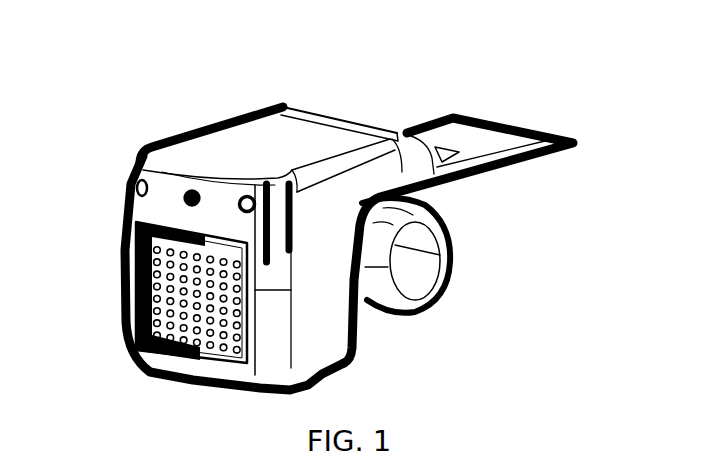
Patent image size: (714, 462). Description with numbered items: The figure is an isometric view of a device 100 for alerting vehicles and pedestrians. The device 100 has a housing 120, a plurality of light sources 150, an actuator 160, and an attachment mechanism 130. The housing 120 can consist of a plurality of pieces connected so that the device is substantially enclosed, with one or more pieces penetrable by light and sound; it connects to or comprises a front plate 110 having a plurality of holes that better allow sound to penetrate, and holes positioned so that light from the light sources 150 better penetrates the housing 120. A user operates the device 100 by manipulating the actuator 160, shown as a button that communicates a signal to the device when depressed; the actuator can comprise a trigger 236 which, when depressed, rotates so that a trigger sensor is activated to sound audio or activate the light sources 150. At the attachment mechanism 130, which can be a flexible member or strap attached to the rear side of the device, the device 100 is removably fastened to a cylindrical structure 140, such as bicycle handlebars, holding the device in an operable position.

The device 100 is at (380, 346).
The front plate 110 is at (155, 265).
The housing 120 is at (276, 136).
The attachment mechanism 130 is at (469, 132).
The cylindrical structure 140 is at (463, 283).
The light sources 150 is at (231, 189).
The actuator 160 is at (343, 102).
The trigger 236 is at (369, 118).